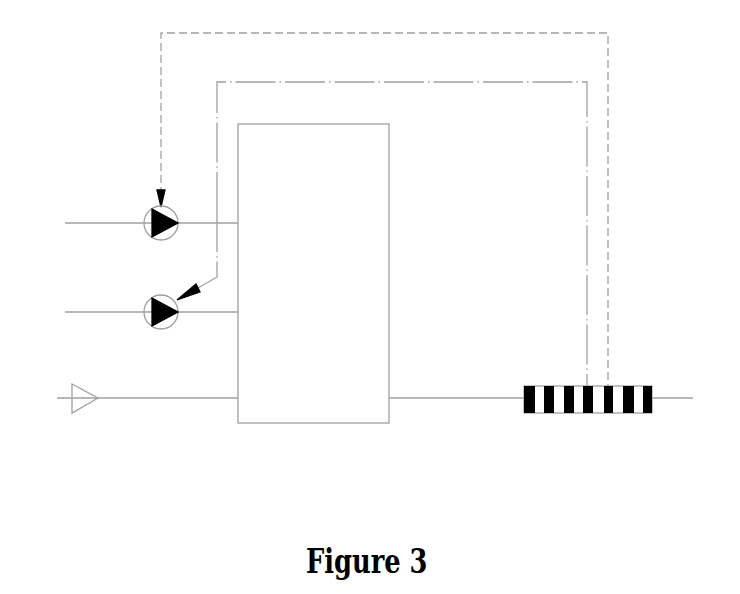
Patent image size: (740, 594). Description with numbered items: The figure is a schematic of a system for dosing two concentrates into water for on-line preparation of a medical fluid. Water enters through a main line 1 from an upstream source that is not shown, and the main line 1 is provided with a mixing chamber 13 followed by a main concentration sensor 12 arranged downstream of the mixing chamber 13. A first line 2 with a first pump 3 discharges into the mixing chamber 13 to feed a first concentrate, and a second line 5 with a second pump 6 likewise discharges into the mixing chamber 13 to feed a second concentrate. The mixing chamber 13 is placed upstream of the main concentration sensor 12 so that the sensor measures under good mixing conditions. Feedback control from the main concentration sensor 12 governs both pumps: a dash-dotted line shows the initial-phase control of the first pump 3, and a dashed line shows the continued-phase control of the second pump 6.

The main line 1 is at (137, 398).
The first line 2 is at (92, 313).
The first pump 3 is at (172, 323).
The second line 5 is at (92, 223).
The second pump 6 is at (152, 209).
The main concentration sensor 12 is at (577, 413).
The mixing chamber 13 is at (329, 423).